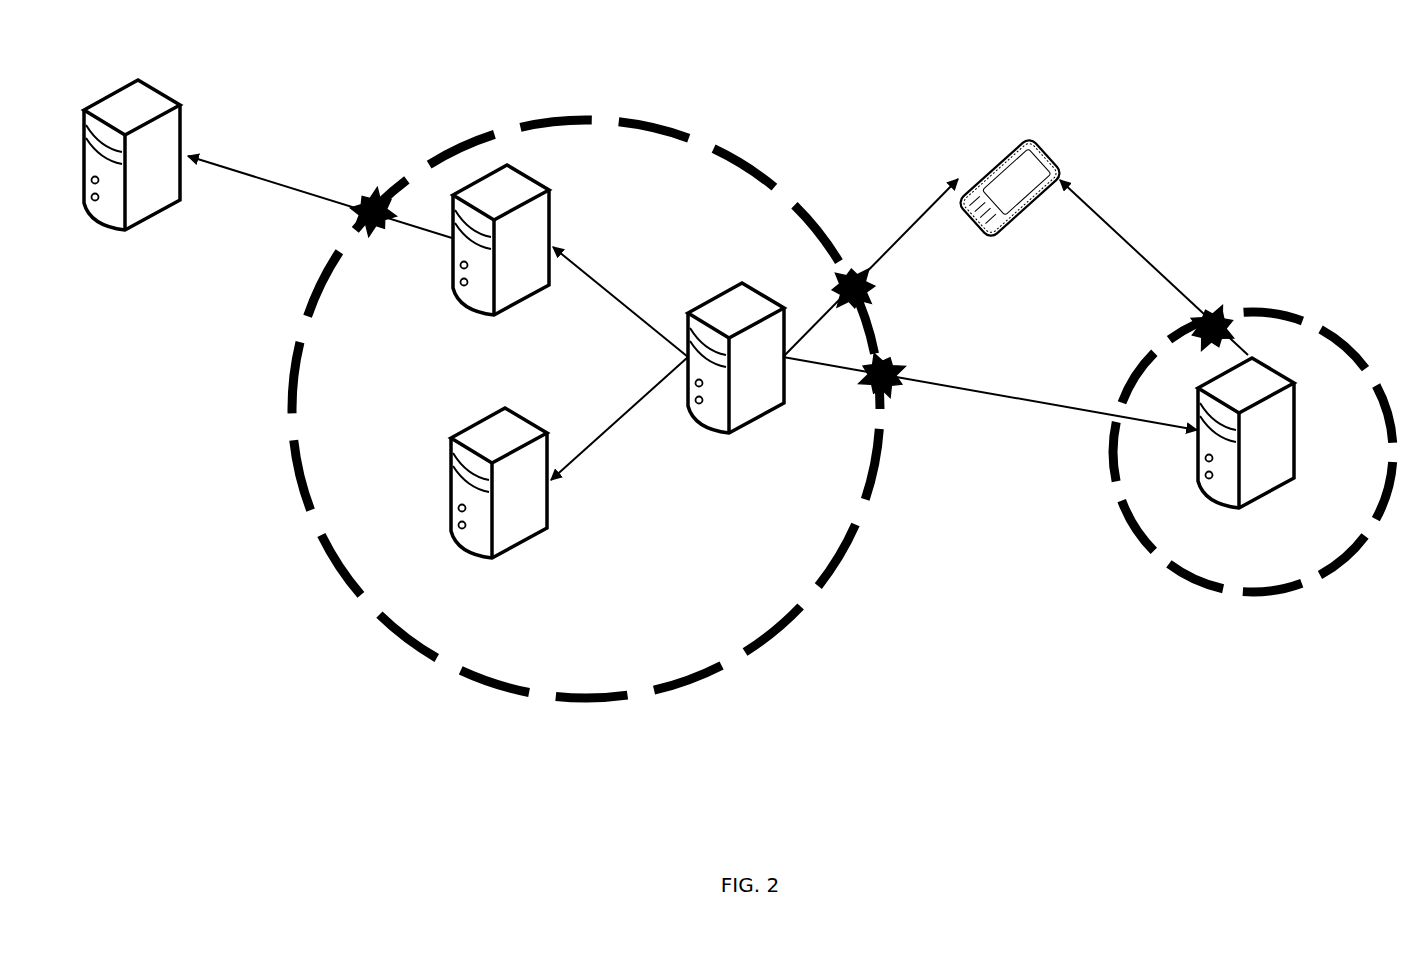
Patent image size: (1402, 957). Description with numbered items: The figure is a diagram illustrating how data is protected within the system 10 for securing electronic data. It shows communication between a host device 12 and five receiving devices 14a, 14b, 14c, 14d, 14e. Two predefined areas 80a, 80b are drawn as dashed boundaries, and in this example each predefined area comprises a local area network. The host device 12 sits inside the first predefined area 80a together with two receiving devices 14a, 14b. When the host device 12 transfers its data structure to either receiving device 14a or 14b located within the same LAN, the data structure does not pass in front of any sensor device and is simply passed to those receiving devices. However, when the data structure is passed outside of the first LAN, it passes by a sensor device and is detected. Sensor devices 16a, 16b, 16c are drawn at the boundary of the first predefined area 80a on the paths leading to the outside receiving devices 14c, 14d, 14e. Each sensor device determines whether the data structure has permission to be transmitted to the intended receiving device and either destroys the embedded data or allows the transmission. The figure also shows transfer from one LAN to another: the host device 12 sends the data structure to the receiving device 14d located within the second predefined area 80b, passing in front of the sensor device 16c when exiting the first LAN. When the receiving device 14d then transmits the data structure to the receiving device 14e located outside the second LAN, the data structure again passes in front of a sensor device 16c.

The system 10 is at (238, 84).
The host device 12 is at (874, 329).
The receiving device 14a is at (498, 264).
The receiving device 14b is at (496, 512).
The receiving device 14c is at (266, 179).
The receiving device 14d is at (1177, 368).
The receiving device 14e is at (1009, 218).
The sensor device 16a is at (366, 195).
The sensor device 16b is at (874, 300).
The sensor device 16c is at (895, 390).
The predefined area 80a is at (290, 387).
The predefined area 80b is at (1147, 355).